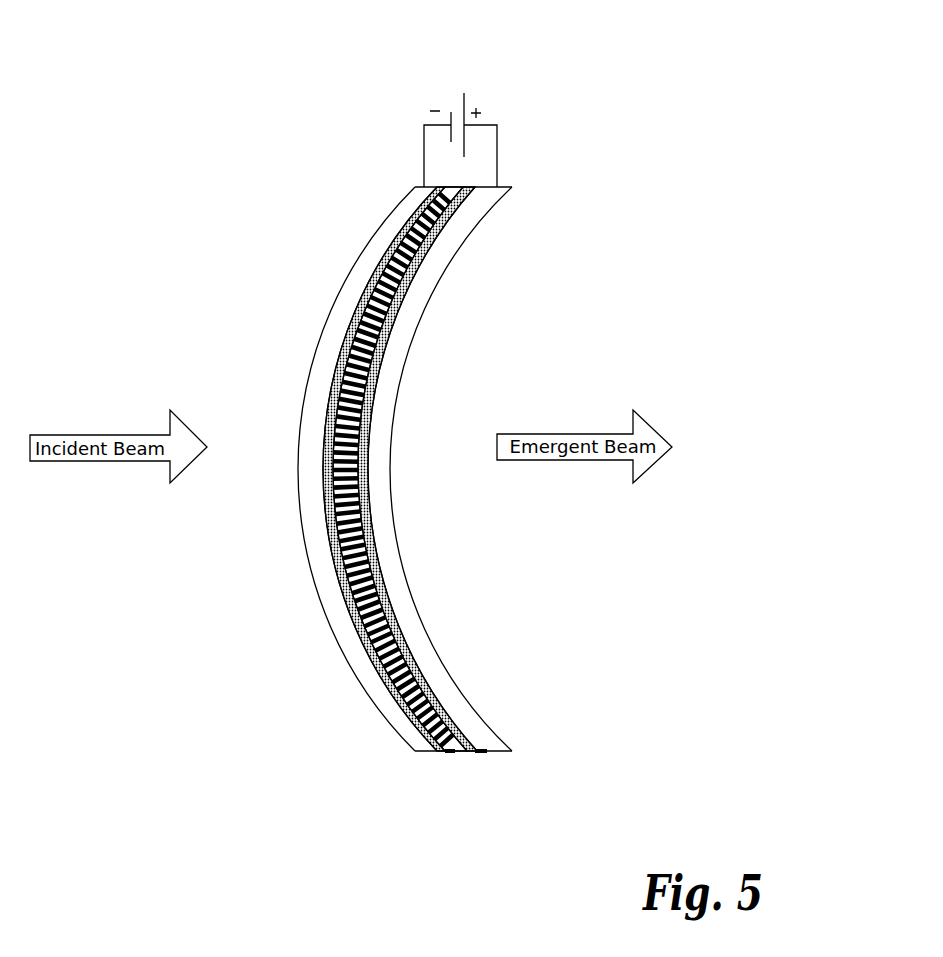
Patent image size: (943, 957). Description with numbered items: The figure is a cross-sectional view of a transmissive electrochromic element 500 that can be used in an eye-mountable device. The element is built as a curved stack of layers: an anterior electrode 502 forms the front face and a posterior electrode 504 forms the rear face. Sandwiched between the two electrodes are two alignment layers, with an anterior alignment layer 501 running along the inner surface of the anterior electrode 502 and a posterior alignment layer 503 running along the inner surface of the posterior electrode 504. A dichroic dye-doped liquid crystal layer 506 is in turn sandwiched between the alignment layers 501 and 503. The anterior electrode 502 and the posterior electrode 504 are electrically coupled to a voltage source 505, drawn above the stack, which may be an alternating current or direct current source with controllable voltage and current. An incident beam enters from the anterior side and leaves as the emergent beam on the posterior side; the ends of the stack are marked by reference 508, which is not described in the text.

The electrochromic element 500 is at (454, 404).
The anterior alignment layer 501 is at (340, 368).
The anterior electrode 502 is at (375, 238).
The posterior alignment layer 503 is at (385, 344).
The posterior electrode 504 is at (457, 224).
The voltage source 505 is at (421, 89).
The dichroic dye-doped liquid crystal layer 506 is at (393, 654).
The edge seal 508 is at (507, 187).